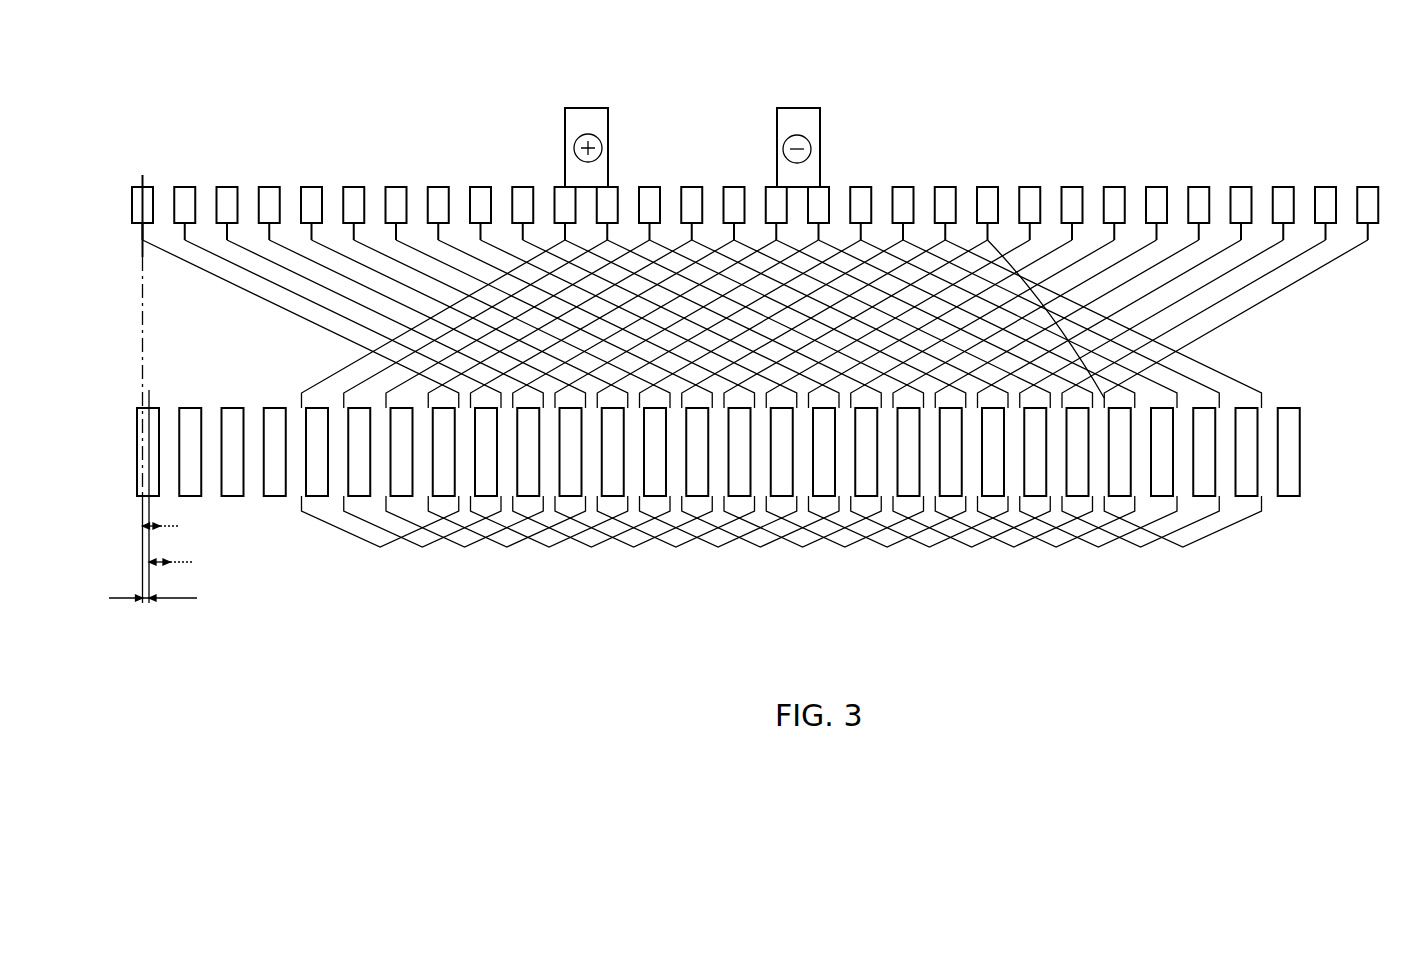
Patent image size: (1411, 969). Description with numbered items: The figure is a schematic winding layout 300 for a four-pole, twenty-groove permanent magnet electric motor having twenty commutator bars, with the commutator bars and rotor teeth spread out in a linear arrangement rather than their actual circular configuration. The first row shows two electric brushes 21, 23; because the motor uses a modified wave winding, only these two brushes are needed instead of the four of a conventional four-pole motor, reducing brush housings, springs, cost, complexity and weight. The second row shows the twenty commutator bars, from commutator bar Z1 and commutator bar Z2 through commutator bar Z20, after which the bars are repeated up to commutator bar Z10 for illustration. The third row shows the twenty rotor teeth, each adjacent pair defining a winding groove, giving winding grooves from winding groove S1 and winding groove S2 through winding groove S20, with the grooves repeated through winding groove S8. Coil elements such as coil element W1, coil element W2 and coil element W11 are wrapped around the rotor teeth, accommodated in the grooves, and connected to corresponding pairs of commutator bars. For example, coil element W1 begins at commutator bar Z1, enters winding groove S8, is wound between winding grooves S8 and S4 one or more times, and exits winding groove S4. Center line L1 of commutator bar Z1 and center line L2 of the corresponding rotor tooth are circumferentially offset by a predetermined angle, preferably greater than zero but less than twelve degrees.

The winding layout 300 is at (469, 37).
The electric brush 21 is at (577, 125).
The electric brush 23 is at (791, 125).
The commutator bar Z1 is at (142, 208).
The commutator bar Z2 is at (182, 203).
The commutator bar Z20 is at (944, 200).
The commutator bar Z10 is at (1366, 200).
The winding groove S1 is at (171, 455).
The winding groove S2 is at (214, 455).
The winding groove S4 is at (299, 455).
The winding groove S20 is at (973, 490).
The winding groove S8 is at (1312, 490).
The coil element W1 is at (338, 527).
The coil element W2 is at (420, 547).
The coil element W11 is at (812, 546).
The center line of commutator bar L1 is at (174, 533).
The center line of rotor tooth L2 is at (183, 569).